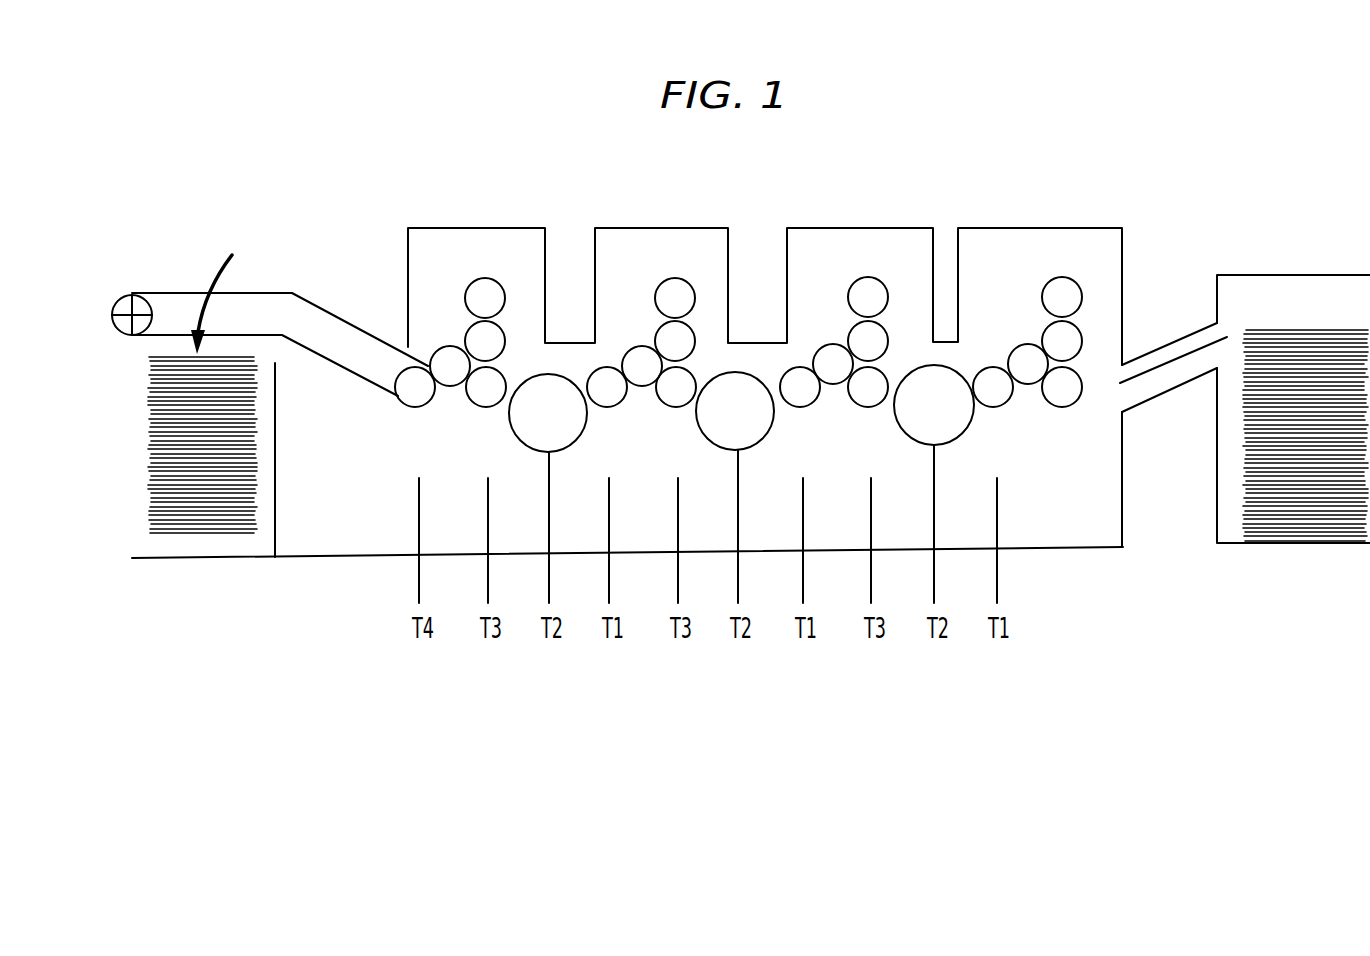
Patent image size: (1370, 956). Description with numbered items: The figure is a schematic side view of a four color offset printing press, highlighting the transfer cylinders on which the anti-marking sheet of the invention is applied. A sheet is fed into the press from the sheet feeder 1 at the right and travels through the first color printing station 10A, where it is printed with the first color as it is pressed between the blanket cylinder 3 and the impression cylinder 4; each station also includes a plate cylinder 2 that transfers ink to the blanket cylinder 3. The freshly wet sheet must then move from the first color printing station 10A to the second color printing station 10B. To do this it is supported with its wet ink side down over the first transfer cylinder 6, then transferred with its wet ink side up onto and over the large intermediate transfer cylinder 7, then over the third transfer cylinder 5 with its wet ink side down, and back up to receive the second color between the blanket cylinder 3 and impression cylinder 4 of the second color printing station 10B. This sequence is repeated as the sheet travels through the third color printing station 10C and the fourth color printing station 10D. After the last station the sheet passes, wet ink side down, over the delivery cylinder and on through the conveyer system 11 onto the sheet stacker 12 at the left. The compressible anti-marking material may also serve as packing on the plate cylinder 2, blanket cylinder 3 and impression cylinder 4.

The sheet feeder 1 is at (1307, 328).
The plate cylinder 2 is at (472, 283).
The blanket cylinder 3 is at (504, 321).
The impression cylinder 4 is at (444, 349).
The third transfer cylinder 5 is at (480, 408).
The first transfer cylinder 6 is at (412, 408).
The intermediate transfer cylinder 7 is at (562, 452).
The first color printing station 10A is at (1053, 225).
The second color printing station 10B is at (873, 225).
The third color printing station 10C is at (662, 225).
The fourth color printing station 10D is at (473, 225).
The conveyer system 11 is at (310, 302).
The sheet stacker 12 is at (224, 295).